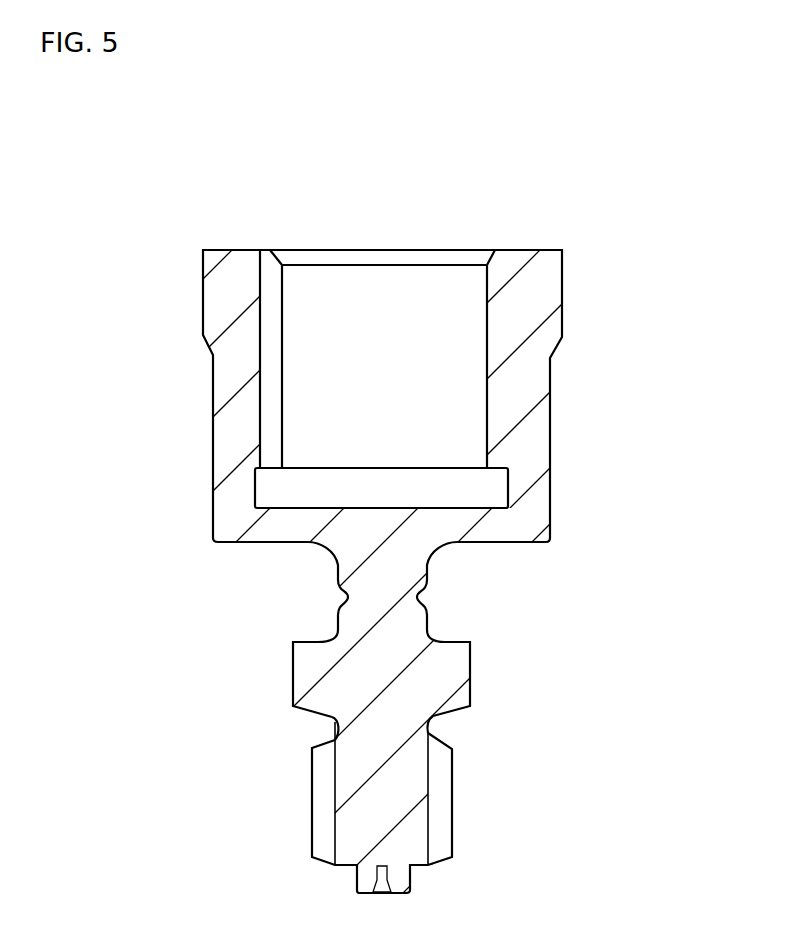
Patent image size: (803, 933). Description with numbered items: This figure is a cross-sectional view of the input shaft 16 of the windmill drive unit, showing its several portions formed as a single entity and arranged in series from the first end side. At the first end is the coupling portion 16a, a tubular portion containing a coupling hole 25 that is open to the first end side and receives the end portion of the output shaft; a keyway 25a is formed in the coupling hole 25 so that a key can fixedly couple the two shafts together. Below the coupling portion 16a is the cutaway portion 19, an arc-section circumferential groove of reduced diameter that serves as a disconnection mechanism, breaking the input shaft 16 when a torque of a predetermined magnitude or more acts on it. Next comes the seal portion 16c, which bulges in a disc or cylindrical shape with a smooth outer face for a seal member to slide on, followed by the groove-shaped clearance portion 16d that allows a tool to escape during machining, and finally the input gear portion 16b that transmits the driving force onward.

The input shaft 16 is at (637, 195).
The coupling portion 16a is at (520, 402).
The input gear portion 16b is at (445, 812).
The seal portion 16c is at (470, 677).
The clearance portion 16d is at (307, 733).
The cutaway portion 19 is at (452, 600).
The coupling hole 25 is at (393, 263).
The keyway 25a is at (262, 328).